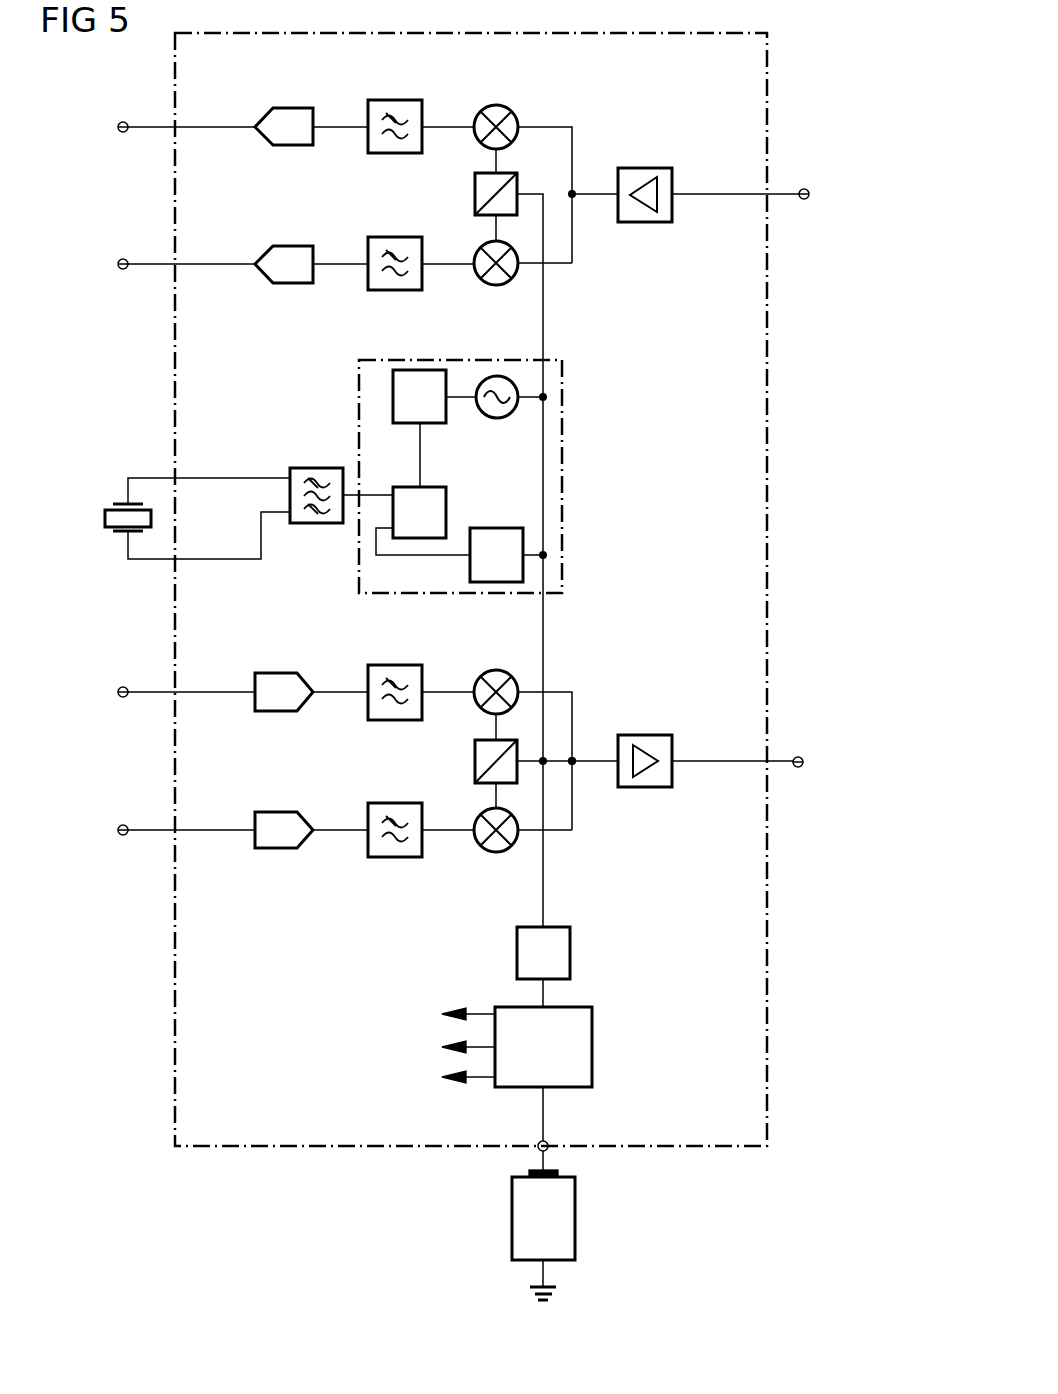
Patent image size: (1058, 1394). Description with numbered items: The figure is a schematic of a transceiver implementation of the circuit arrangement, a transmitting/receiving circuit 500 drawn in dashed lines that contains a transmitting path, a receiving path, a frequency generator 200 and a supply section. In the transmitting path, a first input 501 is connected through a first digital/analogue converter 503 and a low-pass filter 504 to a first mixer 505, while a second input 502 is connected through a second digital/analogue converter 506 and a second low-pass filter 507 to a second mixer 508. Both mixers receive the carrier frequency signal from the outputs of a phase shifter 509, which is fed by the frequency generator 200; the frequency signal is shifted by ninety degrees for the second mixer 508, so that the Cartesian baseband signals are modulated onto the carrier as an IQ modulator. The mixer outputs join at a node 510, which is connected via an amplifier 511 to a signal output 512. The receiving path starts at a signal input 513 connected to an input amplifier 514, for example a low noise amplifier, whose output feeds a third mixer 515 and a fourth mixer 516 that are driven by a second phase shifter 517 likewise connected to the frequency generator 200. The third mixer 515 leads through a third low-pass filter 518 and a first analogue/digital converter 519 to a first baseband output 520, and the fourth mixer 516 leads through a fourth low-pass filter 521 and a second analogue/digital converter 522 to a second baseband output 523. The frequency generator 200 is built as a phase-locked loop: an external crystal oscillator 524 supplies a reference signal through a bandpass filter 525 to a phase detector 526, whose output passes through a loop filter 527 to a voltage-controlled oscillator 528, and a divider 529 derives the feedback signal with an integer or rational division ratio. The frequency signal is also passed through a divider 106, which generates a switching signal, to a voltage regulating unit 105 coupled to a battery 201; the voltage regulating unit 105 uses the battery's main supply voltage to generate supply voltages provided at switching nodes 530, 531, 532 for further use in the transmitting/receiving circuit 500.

The transmitting/receiving circuit 500 is at (767, 993).
The frequency generator 200 is at (562, 488).
The battery 201 is at (575, 1218).
The voltage regulating unit 105 is at (592, 1046).
The divider 106 is at (570, 953).
The first input 501 is at (118, 692).
The second input 502 is at (118, 830).
The first digital/analogue converter 503 is at (283, 672).
The low-pass filter 504 is at (395, 664).
The first mixer 505 is at (496, 669).
The second digital/analogue converter 506 is at (283, 849).
The second low-pass filter 507 is at (395, 858).
The second mixer 508 is at (496, 853).
The phase shifter 509 is at (475, 761).
The node 510 is at (574, 764).
The amplifier 511 is at (645, 734).
The signal output 512 is at (803, 762).
The signal input 513 is at (809, 194).
The input amplifier 514 is at (645, 167).
The third mixer 515 is at (496, 104).
The fourth mixer 516 is at (496, 286).
The second phase shifter 517 is at (475, 194).
The third low-pass filter 518 is at (395, 99).
The first analogue/digital converter 519 is at (290, 107).
The first baseband output 520 is at (118, 127).
The fourth low-pass filter 521 is at (395, 291).
The second analogue/digital converter 522 is at (290, 284).
The second baseband output 523 is at (118, 264).
The external crystal oscillator 524 is at (122, 534).
The bandpass filter 525 is at (317, 467).
The phase detector 526 is at (405, 486).
The loop filter 527 is at (433, 423).
The voltage-controlled oscillator 528 is at (502, 418).
The divider 529 is at (494, 527).
The switching node 530 is at (476, 1010).
The switching node 531 is at (476, 1046).
The switching node 532 is at (477, 1080).